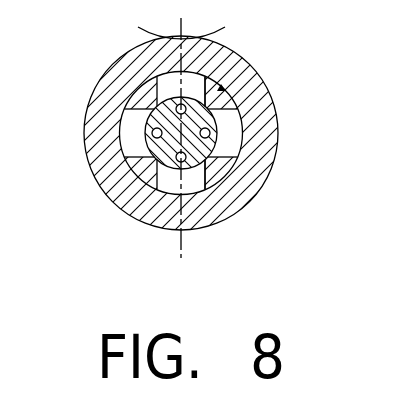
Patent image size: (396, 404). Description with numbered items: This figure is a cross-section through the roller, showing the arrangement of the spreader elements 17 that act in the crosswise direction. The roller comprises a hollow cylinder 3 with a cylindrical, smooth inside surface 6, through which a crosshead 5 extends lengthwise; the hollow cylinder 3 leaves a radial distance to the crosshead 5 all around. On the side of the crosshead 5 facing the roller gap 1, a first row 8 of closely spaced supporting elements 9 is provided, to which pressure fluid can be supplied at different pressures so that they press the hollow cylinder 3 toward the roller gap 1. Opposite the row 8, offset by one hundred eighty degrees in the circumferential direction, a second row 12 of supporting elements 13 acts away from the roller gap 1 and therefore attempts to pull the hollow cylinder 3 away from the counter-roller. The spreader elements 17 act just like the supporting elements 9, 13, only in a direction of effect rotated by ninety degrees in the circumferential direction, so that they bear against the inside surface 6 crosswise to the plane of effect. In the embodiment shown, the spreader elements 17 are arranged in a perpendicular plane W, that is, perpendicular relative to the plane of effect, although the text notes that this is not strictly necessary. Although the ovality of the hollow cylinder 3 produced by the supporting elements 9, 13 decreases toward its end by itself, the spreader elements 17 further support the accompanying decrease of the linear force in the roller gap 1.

The roller gap 1 is at (238, 37).
The hollow cylinder 3 is at (198, 135).
The crosshead 5 is at (110, 70).
The inside surface 6 is at (223, 86).
The first row 8 is at (226, 97).
The supporting elements 9 is at (150, 38).
The second row 12 is at (226, 172).
The supporting elements 13 is at (180, 173).
The spreader elements 17 is at (132, 120).
The perpendicular plane W is at (182, 248).